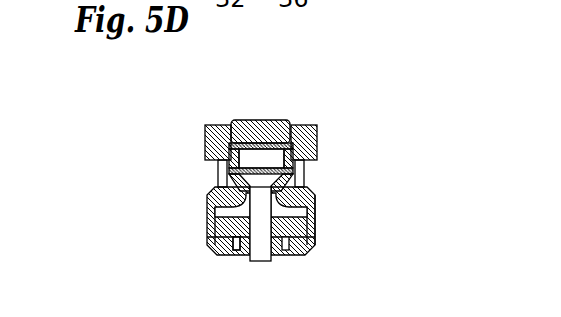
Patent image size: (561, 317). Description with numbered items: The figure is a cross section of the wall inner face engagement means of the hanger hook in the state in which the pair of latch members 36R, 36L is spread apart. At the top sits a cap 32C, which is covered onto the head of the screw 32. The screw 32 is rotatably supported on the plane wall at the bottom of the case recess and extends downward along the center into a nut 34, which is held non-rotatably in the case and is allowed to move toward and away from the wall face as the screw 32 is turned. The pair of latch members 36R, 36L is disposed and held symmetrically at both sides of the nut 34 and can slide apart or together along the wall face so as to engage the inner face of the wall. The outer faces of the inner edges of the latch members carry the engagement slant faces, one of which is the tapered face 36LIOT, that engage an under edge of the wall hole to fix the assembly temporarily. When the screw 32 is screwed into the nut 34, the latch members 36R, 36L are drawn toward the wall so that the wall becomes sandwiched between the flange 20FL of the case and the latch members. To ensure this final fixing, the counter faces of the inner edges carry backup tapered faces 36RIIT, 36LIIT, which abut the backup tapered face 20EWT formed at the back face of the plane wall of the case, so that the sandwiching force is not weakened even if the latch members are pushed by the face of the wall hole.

The cap 32C is at (262, 119).
The flange 20FL is at (318, 132).
The backup tapered face 36LIIT is at (306, 184).
The engagement slant face 36LIOT is at (314, 190).
The latch member 36L is at (359, 203).
The backup tapered face 20EWT is at (228, 184).
The backup tapered face 36RIIT is at (208, 201).
The latch member 36R is at (166, 219).
The nut 34 is at (237, 255).
The screw 32 is at (263, 252).